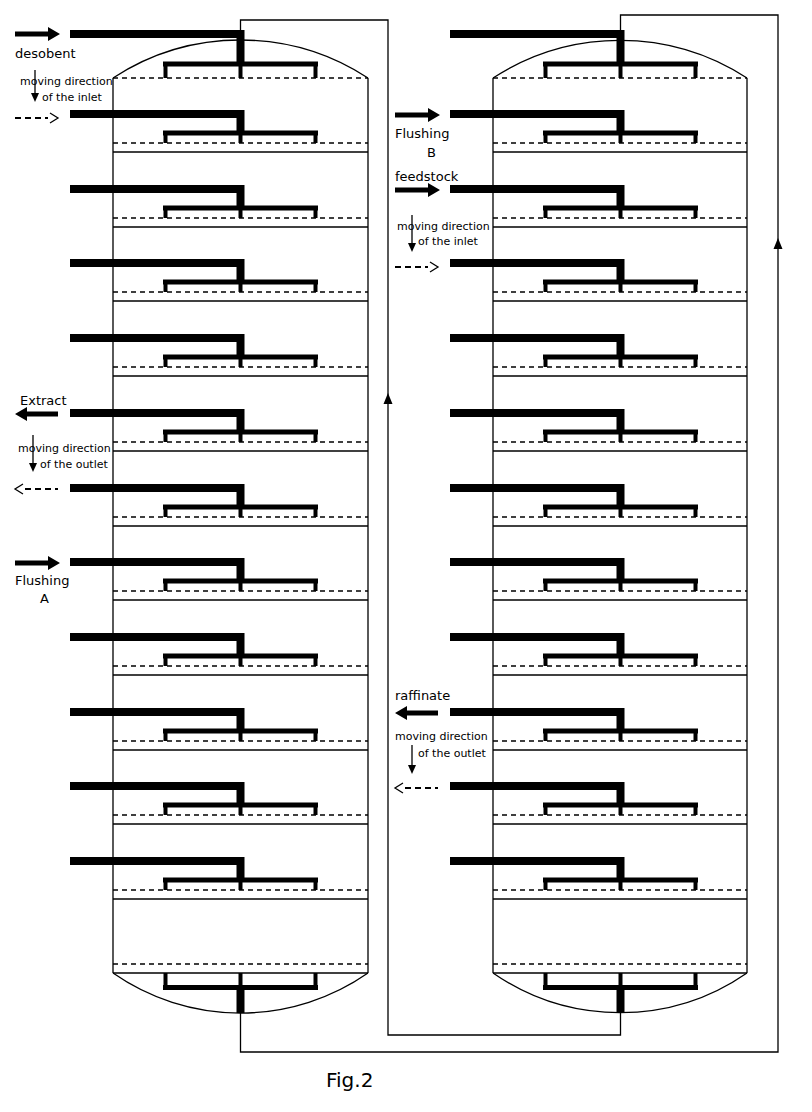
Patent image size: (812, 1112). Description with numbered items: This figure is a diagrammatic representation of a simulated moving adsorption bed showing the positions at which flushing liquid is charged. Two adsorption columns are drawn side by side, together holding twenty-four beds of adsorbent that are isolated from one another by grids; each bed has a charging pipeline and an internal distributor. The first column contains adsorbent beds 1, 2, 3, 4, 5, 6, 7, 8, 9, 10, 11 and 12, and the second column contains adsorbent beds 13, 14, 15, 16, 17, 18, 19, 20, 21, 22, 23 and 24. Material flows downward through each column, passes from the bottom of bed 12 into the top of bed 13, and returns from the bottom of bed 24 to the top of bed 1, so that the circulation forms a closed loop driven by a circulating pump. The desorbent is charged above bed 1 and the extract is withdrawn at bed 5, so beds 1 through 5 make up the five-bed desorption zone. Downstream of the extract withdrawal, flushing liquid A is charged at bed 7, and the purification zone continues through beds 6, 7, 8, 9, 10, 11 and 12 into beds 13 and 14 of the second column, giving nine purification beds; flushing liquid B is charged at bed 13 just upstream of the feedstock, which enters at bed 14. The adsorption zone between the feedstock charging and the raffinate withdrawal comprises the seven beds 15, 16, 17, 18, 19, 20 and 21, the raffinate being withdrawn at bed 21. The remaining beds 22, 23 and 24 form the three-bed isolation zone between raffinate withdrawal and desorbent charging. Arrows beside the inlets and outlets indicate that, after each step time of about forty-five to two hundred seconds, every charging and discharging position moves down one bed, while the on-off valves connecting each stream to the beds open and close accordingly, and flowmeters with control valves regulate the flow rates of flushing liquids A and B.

The adsorbent bed 1 is at (219, 130).
The adsorbent bed 2 is at (219, 205).
The adsorbent bed 3 is at (219, 279).
The adsorbent bed 4 is at (219, 354).
The adsorbent bed 5 is at (219, 429).
The adsorbent bed 6 is at (219, 504).
The adsorbent bed 7 is at (219, 578).
The adsorbent bed 8 is at (219, 653).
The adsorbent bed 9 is at (219, 728).
The adsorbent bed 10 is at (219, 802).
The adsorbent bed 11 is at (219, 877).
The adsorbent bed 12 is at (240, 952).
The adsorbent bed 13 is at (598, 130).
The adsorbent bed 14 is at (598, 205).
The adsorbent bed 15 is at (598, 279).
The adsorbent bed 16 is at (598, 354).
The adsorbent bed 17 is at (598, 429).
The adsorbent bed 18 is at (598, 504).
The adsorbent bed 19 is at (598, 578).
The adsorbent bed 20 is at (598, 653).
The adsorbent bed 21 is at (598, 728).
The adsorbent bed 22 is at (598, 802).
The adsorbent bed 23 is at (598, 877).
The adsorbent bed 24 is at (620, 952).